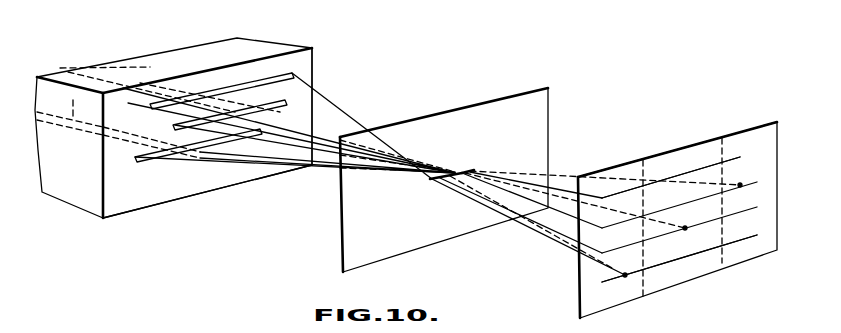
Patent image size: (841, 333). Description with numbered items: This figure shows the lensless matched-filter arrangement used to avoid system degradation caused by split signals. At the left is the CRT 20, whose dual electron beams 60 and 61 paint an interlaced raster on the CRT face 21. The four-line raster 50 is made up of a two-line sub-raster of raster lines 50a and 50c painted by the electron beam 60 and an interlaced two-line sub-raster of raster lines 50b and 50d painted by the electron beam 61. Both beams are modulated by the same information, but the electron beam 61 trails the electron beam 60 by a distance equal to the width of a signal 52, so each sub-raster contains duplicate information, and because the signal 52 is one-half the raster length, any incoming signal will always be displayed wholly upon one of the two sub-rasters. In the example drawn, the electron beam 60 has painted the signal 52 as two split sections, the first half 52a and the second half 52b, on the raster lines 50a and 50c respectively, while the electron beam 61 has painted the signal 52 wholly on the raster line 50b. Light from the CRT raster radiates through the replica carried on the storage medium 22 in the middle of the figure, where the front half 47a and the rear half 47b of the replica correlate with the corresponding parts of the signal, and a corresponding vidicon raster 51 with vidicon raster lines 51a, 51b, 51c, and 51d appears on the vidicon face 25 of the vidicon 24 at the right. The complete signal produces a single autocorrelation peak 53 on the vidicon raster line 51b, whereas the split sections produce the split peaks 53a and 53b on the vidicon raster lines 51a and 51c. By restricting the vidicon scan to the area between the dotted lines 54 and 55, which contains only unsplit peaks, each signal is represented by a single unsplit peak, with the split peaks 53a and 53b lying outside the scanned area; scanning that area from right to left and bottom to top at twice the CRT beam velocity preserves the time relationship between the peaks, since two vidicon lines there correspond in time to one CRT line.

The CRT 20 is at (237, 38).
The CRT face 21 is at (311, 60).
The storage medium 22 is at (487, 100).
The vidicon 24 is at (777, 127).
The vidicon face 25 is at (728, 137).
The front half of replica 47a is at (432, 181).
The rear half of replica 47b is at (464, 169).
The four-line raster 50 is at (121, 194).
The raster line 50a is at (163, 108).
The raster line 50b is at (262, 150).
The raster line 50c is at (256, 128).
The raster line 50d is at (262, 148).
The vidicon raster 51 is at (767, 243).
The vidicon raster line 51a is at (744, 234).
The vidicon raster line 51b is at (744, 207).
The vidicon raster line 51c is at (744, 182).
The vidicon raster line 51d is at (738, 157).
The signal 52 is at (185, 122).
The first half of signal 52a is at (263, 78).
The second half of signal 52b is at (155, 162).
The autocorrelation peak 53 is at (685, 228).
The split peak 53a is at (625, 277).
The split peak 53b is at (740, 184).
The dotted line 54 is at (648, 284).
The dotted line 55 is at (723, 263).
The electron beam 60 is at (73, 98).
The electron beam 61 is at (146, 68).